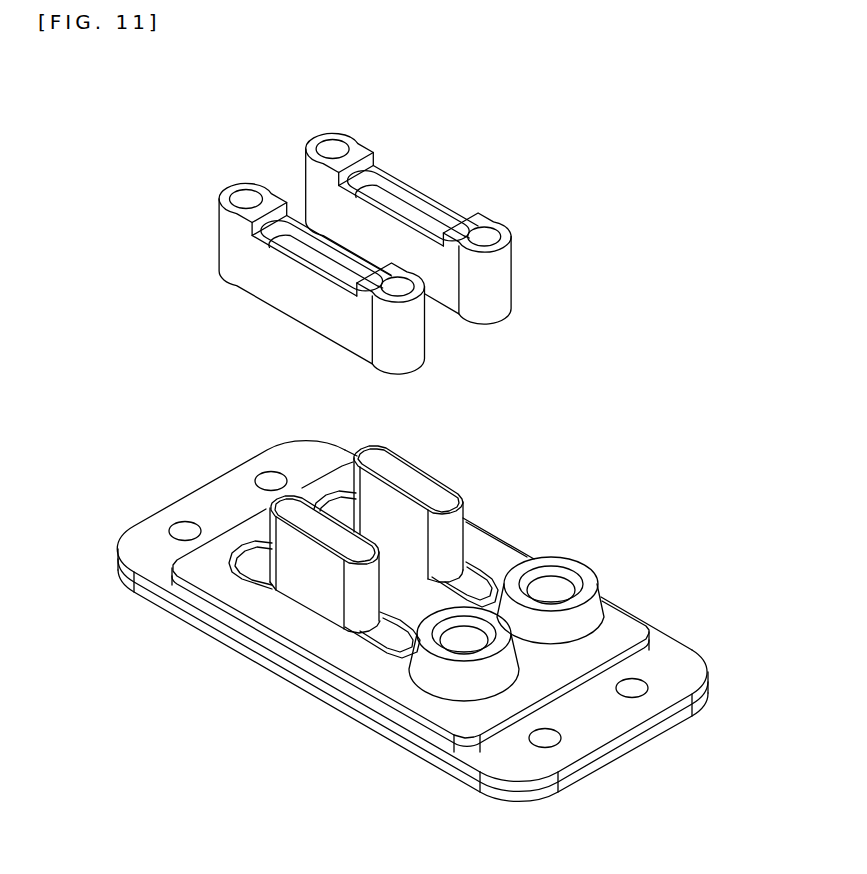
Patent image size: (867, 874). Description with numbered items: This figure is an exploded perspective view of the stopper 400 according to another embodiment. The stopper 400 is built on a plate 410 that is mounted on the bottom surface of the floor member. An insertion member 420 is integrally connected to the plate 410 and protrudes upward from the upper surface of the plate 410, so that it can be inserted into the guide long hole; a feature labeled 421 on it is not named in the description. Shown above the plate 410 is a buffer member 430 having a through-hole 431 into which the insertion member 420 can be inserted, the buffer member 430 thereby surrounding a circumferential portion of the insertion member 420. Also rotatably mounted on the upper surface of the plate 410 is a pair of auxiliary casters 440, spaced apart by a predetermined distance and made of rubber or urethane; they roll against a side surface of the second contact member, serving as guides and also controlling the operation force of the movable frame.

The stopper 400 is at (603, 193).
The plate 410 is at (622, 627).
The insertion member 420 is at (463, 538).
The support protrusion 421 is at (452, 487).
The buffer member 430 is at (500, 279).
The through-hole 431 is at (408, 208).
The auxiliary casters 440 is at (580, 567).